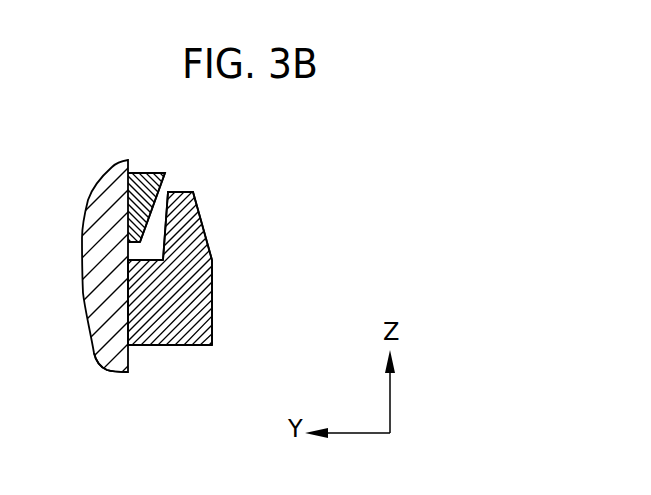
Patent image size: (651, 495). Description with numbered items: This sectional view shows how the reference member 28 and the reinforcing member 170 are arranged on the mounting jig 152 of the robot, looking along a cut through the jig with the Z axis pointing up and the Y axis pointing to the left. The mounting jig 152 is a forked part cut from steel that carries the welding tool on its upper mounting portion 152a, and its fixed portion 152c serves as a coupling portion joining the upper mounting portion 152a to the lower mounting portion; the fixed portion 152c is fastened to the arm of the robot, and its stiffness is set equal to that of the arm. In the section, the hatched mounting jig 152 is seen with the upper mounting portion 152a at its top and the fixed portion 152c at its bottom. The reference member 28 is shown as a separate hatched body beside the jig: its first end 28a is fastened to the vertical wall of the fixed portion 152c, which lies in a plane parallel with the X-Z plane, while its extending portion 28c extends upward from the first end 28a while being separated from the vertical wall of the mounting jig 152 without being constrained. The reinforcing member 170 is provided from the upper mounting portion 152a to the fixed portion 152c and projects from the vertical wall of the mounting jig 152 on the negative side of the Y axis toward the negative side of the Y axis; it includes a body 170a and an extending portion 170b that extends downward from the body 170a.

The reference member 28 is at (225, 268).
The first end 28a is at (207, 305).
The extending portion 28c is at (201, 223).
The mounting jig 152 is at (155, 357).
The upper mounting portion 152a is at (134, 170).
The fixed portion 152c is at (120, 350).
The reinforcing member 170 is at (117, 222).
The body 170a is at (241, 202).
The extending portion 170b is at (162, 182).